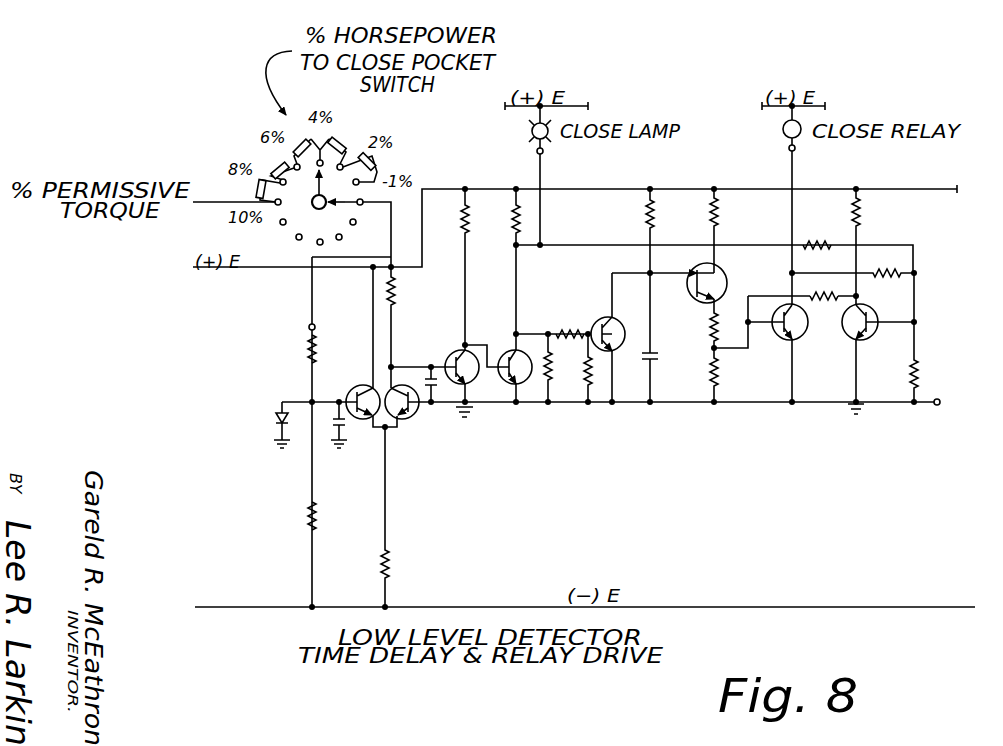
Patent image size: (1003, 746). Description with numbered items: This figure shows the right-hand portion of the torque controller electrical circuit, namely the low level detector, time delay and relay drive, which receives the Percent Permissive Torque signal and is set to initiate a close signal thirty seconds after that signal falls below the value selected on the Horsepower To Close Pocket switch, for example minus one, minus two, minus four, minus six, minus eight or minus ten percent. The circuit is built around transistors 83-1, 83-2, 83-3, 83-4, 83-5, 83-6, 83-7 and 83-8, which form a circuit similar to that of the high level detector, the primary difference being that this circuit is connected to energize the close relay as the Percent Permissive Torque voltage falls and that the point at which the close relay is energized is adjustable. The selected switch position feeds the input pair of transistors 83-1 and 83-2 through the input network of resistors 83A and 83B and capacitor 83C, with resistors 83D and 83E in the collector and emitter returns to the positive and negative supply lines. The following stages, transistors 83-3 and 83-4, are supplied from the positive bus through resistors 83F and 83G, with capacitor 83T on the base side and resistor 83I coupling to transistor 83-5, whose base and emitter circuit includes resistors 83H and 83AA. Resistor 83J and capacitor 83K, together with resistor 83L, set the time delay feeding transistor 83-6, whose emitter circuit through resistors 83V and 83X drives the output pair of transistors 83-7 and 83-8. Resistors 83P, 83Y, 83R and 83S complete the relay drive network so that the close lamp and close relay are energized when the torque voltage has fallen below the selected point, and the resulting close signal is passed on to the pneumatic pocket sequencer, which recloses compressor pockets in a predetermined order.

The resistor 83A is at (306, 356).
The resistor 83B is at (302, 527).
The capacitor 83C is at (330, 434).
The resistor 83D is at (402, 292).
The resistor 83E is at (418, 575).
The resistor 83F is at (477, 198).
The resistor 83G is at (505, 224).
The resistor 83H is at (553, 380).
The resistor 83I is at (573, 326).
The resistor 83J is at (640, 227).
The capacitor 83K is at (657, 360).
The resistor 83L is at (720, 216).
The resistor 83P is at (827, 241).
The resistor 83R is at (890, 268).
The resistor 83S is at (916, 372).
The capacitor 83T is at (422, 366).
The resistor 83V is at (703, 338).
The resistor 83X is at (742, 367).
The resistor 83Y is at (862, 225).
The resistor 83AA is at (590, 385).
The transistor 83-1 is at (344, 389).
The transistor 83-2 is at (418, 418).
The transistor 83-3 is at (503, 334).
The transistor 83-4 is at (510, 390).
The transistor 83-5 is at (600, 312).
The transistor 83-6 is at (742, 270).
The transistor 83-7 is at (799, 336).
The transistor 83-8 is at (874, 336).